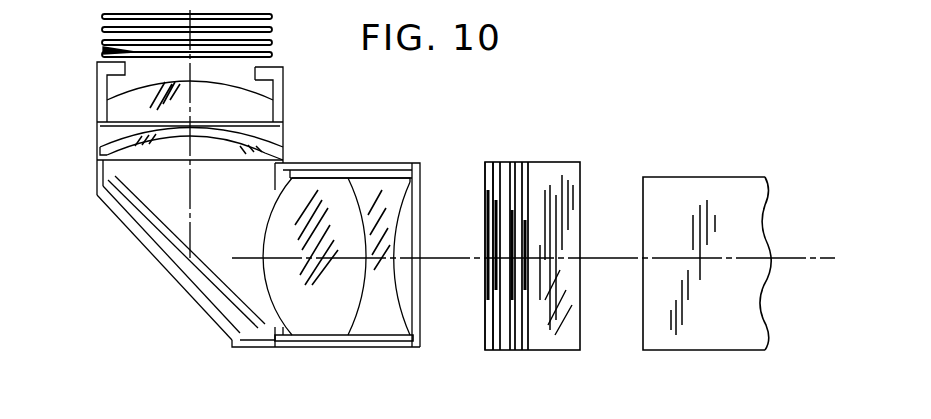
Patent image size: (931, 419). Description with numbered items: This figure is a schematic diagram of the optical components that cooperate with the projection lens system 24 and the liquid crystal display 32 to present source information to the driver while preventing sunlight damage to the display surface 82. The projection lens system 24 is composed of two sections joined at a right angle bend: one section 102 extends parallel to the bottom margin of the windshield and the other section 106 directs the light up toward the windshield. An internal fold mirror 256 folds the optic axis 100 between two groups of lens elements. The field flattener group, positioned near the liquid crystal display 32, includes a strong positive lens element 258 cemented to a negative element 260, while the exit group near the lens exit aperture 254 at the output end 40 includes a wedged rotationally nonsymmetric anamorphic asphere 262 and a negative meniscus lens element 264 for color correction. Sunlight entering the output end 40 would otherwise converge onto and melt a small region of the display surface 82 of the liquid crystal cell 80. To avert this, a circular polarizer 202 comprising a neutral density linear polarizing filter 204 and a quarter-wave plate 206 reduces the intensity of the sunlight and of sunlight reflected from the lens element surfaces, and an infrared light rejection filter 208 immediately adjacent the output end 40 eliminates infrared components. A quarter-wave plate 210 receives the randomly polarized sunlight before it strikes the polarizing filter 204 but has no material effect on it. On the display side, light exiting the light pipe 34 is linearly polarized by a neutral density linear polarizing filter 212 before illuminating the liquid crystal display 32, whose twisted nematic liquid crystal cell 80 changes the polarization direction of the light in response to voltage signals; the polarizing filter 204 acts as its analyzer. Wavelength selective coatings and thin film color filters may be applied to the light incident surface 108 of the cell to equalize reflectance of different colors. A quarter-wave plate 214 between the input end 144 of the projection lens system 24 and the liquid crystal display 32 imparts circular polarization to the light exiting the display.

The projection lens system 24 is at (279, 350).
The liquid crystal display 32 is at (506, 352).
The light pipe 34 is at (700, 350).
The output end 40 is at (112, 50).
The liquid crystal cell 80 is at (510, 165).
The display surface 82 is at (500, 166).
The optic axis 100 is at (818, 258).
The section 102 is at (333, 348).
The section 106 is at (283, 90).
The light incident surface 108 is at (518, 352).
The input end 144 is at (421, 290).
The circular polarizer 202 is at (96, 34).
The neutral density linear polarizing filter 204 is at (276, 30).
The quarter-wave plate 206 is at (276, 43).
The infrared light rejection filter 208 is at (276, 57).
The quarter-wave plate 210 is at (276, 17).
The neutral density linear polarizing filter 212 is at (525, 352).
The quarter-wave plate 214 is at (490, 350).
The lens exit aperture 254 is at (140, 64).
The internal fold mirror 256 is at (229, 341).
The strong positive lens element 258 is at (396, 327).
The negative element 260 is at (337, 312).
The wedged rotationally nonsymmetric anamorphic asphere 262 is at (236, 110).
The negative meniscus lens element 264 is at (280, 140).